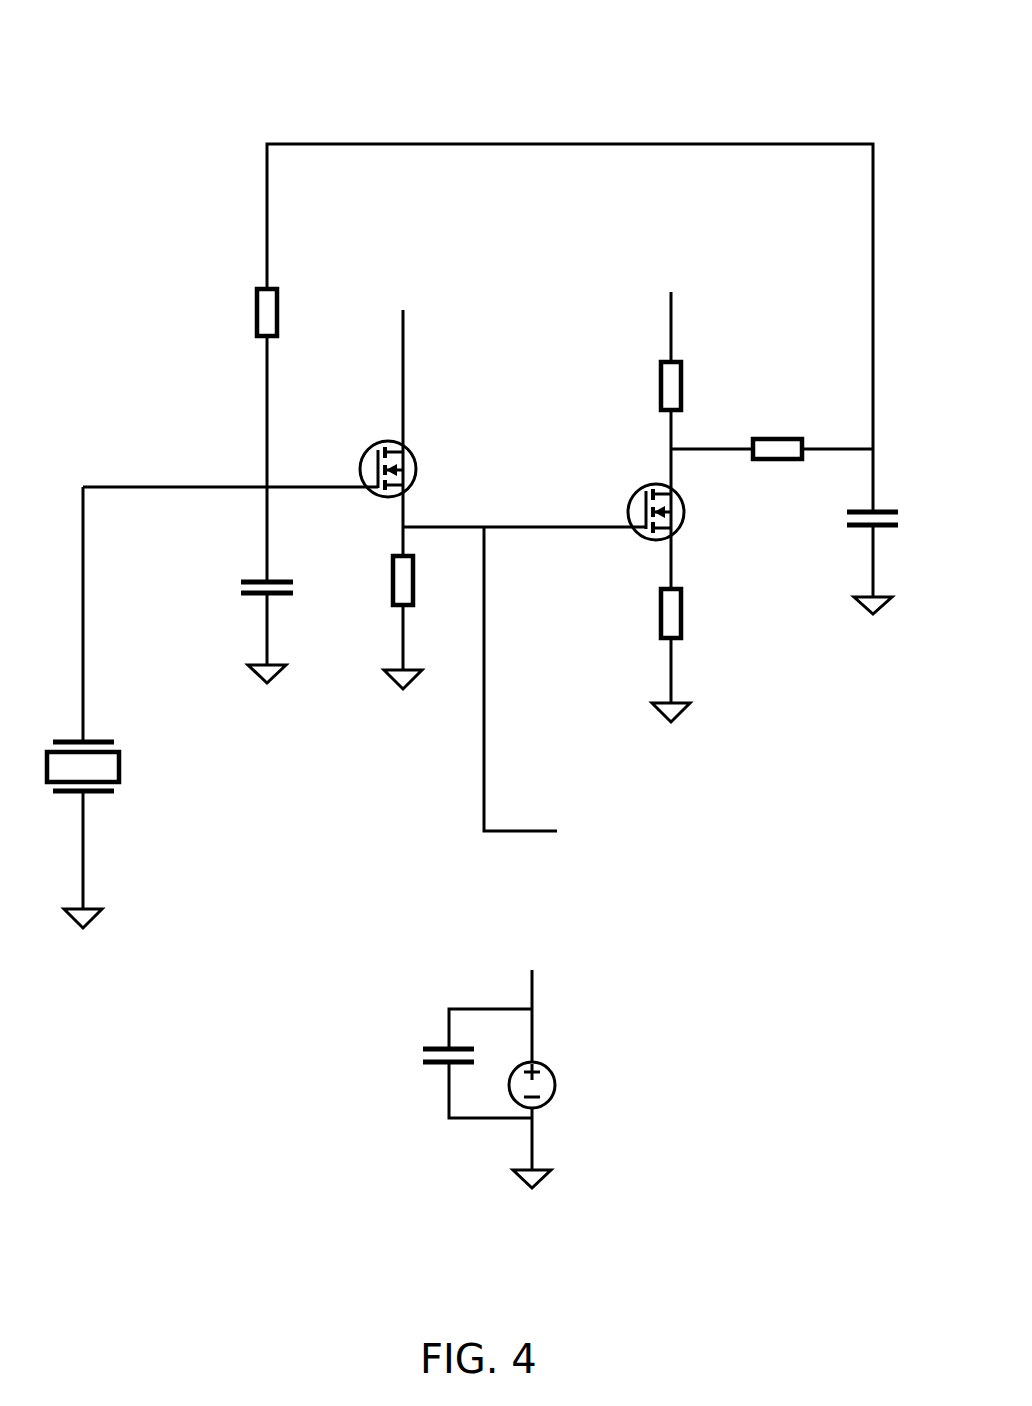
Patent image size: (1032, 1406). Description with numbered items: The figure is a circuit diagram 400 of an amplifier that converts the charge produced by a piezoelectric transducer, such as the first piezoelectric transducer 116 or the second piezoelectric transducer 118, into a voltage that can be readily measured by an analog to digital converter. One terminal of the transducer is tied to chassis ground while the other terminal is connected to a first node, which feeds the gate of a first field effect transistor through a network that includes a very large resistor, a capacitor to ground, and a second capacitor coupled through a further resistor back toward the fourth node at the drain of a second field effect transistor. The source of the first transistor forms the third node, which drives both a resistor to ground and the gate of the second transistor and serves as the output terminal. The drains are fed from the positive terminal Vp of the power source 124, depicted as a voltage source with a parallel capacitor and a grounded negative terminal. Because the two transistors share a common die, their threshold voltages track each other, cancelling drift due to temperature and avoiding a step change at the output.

The circuit diagram 400 is at (476, 594).
The first piezoelectric transducer 116 is at (205, 707).
The second piezoelectric transducer 118 is at (135, 707).
The power source 124 is at (579, 1064).